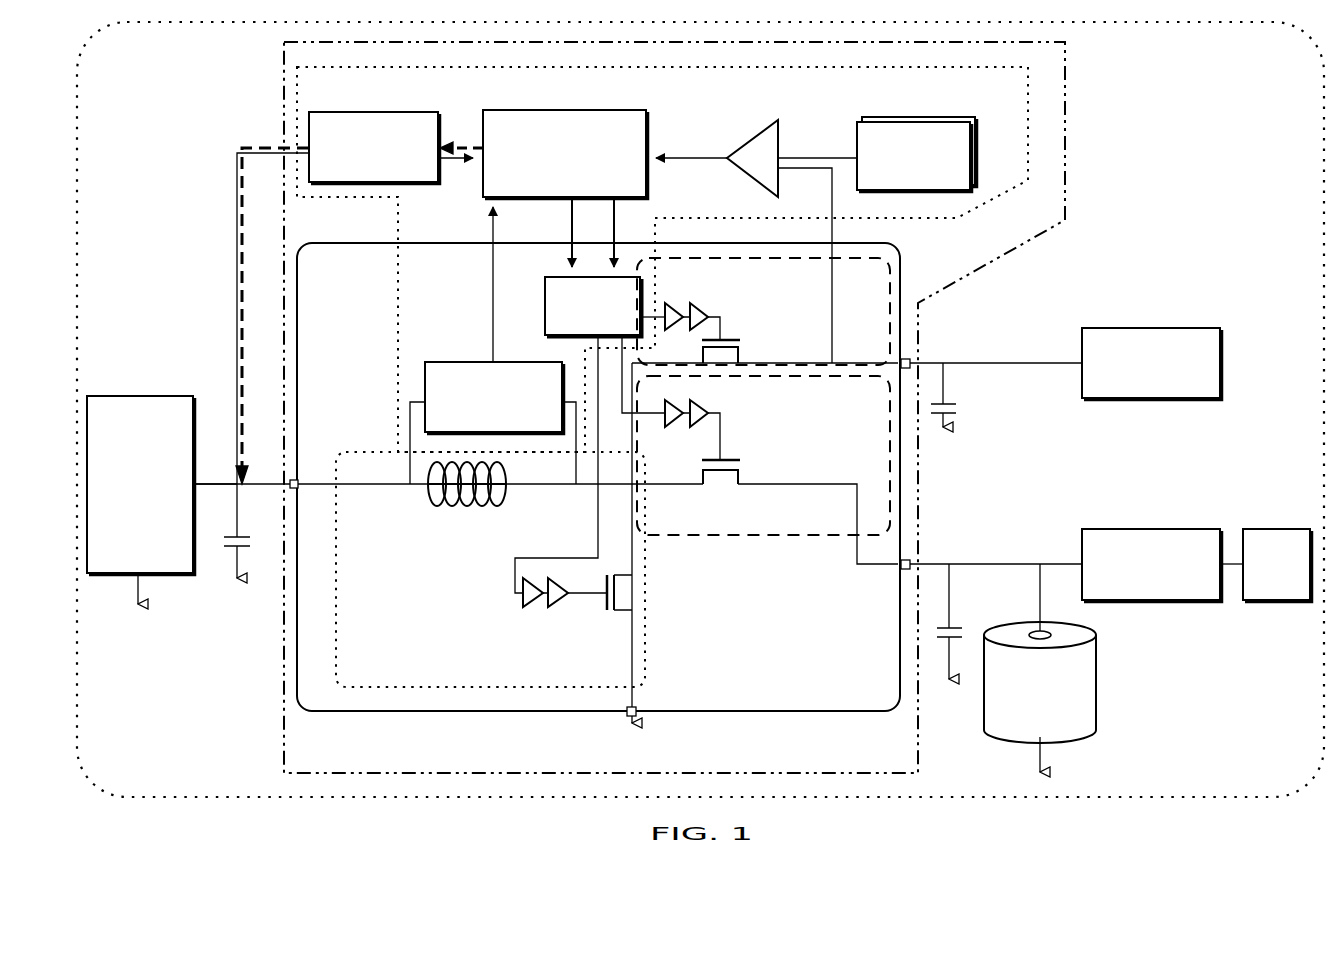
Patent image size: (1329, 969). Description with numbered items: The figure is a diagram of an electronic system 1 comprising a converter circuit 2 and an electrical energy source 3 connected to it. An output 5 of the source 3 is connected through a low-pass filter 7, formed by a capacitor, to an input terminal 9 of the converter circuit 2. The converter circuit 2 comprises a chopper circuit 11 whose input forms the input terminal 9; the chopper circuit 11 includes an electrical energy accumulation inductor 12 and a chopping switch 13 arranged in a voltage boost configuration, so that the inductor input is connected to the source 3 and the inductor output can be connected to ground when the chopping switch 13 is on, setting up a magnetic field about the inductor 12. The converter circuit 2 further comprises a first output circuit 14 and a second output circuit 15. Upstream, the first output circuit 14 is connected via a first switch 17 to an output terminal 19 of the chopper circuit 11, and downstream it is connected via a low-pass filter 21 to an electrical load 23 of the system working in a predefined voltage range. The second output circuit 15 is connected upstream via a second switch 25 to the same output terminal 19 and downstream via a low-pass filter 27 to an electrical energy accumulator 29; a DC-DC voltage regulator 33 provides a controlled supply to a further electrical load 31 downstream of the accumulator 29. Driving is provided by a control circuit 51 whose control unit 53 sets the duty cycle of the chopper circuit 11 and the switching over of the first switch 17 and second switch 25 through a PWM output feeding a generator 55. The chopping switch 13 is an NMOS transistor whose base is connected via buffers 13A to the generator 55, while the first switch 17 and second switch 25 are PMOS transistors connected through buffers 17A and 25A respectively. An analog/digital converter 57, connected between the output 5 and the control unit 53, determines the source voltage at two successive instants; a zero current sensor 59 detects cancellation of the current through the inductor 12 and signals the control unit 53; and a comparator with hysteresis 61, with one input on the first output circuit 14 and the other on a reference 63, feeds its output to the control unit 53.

The electronic system 1 is at (1203, 216).
The converter circuit 2 is at (402, 762).
The electrical energy source 3 is at (145, 526).
The output 5 is at (195, 477).
The low-pass filter 7 is at (237, 592).
The input terminal 9 is at (298, 484).
The chopper circuit 11 is at (415, 677).
The electrical energy accumulation inductor 12 is at (497, 497).
The chopping switch 13 is at (575, 604).
The buffers 13A is at (523, 597).
The first output circuit 14 is at (817, 301).
The second output circuit 15 is at (693, 511).
The first switch 17 is at (765, 347).
The buffers 17A is at (675, 325).
The output terminal 19 is at (632, 627).
The low-pass filter 21 is at (956, 408).
The electrical load 23 is at (1161, 389).
The second switch 25 is at (740, 462).
The buffers 25A is at (670, 427).
The low-pass filter 27 is at (940, 630).
The electrical energy accumulator 29 is at (1051, 731).
The electrical load 31 is at (1287, 584).
The DC-DC voltage regulator 33 is at (1162, 594).
The control circuit 51 is at (719, 107).
The control unit 53 is at (574, 173).
The generator 55 is at (603, 324).
The analog/digital converter 57 is at (384, 174).
The zero current sensor 59 is at (503, 424).
The comparator with hysteresis 61 is at (778, 140).
The reference 63 is at (923, 174).